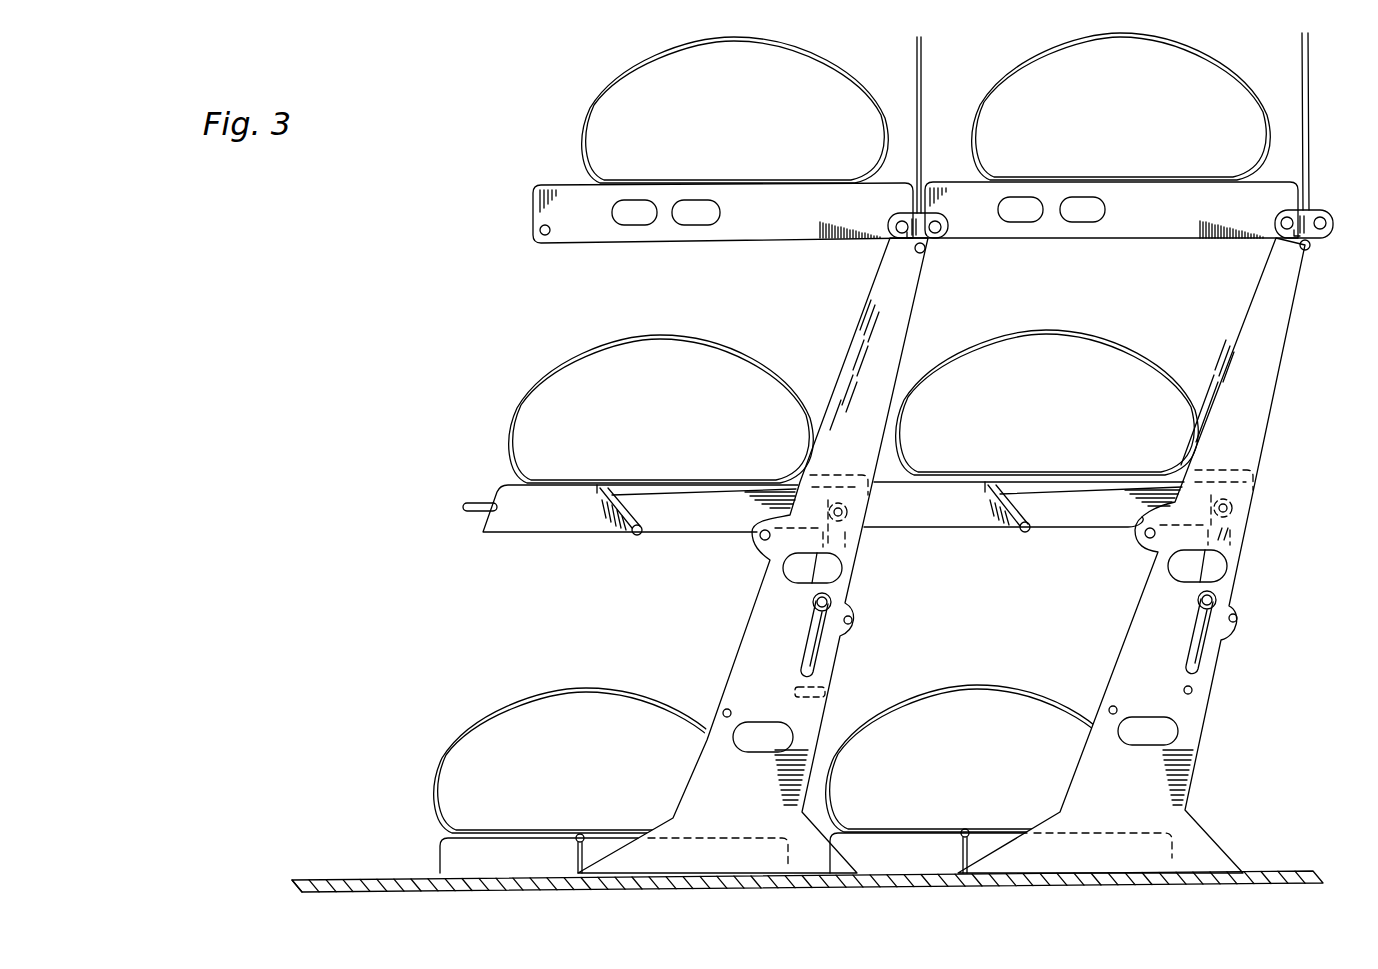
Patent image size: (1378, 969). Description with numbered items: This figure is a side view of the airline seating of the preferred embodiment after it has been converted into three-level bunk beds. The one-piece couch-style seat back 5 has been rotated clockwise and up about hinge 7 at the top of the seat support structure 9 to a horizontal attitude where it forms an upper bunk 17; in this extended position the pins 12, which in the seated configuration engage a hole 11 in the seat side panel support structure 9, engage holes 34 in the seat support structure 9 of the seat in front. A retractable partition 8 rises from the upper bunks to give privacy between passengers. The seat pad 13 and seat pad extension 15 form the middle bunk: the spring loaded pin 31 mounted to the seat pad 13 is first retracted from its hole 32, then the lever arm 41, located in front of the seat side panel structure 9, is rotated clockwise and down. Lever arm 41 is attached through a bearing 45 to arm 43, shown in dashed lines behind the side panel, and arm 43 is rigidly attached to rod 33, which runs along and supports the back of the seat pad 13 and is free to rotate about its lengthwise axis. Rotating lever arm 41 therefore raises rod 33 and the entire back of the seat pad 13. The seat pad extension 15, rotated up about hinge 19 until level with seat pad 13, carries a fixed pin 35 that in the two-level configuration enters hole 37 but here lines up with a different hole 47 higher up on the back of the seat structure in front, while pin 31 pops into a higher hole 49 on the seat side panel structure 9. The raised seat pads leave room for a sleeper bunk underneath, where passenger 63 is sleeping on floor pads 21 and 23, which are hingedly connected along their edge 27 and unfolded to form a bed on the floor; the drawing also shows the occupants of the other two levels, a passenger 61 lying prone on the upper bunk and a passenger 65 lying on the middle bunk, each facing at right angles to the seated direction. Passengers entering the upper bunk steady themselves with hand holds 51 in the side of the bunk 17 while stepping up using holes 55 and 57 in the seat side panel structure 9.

The seat back 5 is at (1152, 239).
The hinge 7 is at (1290, 217).
The retractable partition 8 is at (1312, 58).
The seat support structure 9 is at (1262, 308).
The hole 11 is at (1248, 615).
The pin 12 is at (948, 227).
The seat pad 13 is at (1043, 520).
The seat pad extension 15 is at (953, 520).
The upper bunk 17 is at (1208, 231).
The hinge 19 is at (1022, 531).
The floor pad 21 is at (855, 852).
The floor pad 23 is at (980, 855).
The edge 27 is at (961, 841).
The spring loaded pin 31 is at (1206, 507).
The hole 32 is at (1118, 710).
The rod 33 is at (1232, 508).
The hole 34 is at (936, 236).
The fixed pin 35 is at (876, 500).
The hole 37 is at (826, 692).
The lever arm 41 is at (1195, 632).
The arm 43 is at (1243, 542).
The bearing 45 is at (1222, 598).
The hole 47 is at (870, 522).
The hole 49 is at (1153, 540).
The hand hold 51 is at (1018, 217).
The hole 55 is at (1150, 746).
The hole 57 is at (1232, 563).
The upper basket hoop 61 is at (1158, 58).
The passenger 63 is at (997, 713).
The middle basket hoop 65 is at (1055, 357).